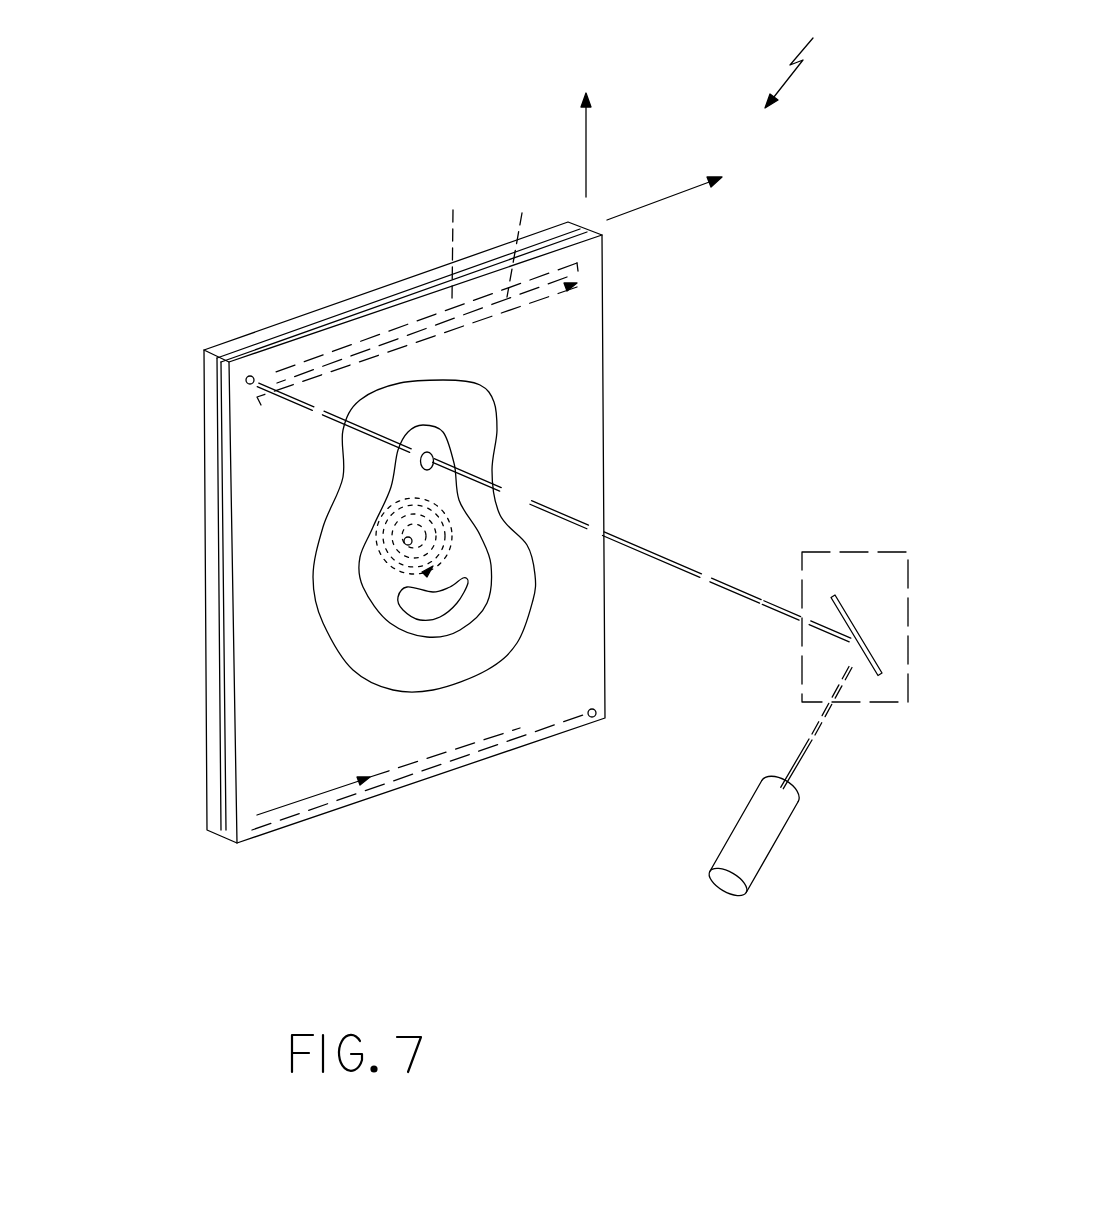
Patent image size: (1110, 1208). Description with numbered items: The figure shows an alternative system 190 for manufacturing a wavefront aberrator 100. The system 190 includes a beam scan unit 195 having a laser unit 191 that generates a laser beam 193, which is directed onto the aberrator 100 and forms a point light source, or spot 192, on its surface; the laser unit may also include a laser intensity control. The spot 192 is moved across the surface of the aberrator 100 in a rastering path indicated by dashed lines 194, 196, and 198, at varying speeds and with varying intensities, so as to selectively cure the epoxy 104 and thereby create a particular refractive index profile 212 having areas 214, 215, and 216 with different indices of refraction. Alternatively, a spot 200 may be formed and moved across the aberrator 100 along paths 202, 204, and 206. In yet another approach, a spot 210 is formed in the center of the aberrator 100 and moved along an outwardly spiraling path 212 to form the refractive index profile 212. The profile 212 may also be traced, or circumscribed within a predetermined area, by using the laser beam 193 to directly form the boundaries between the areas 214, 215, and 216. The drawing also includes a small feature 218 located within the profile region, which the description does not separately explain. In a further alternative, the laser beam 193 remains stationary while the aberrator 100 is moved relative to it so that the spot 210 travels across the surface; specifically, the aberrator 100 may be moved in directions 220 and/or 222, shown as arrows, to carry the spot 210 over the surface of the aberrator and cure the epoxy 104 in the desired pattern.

The wavefront aberrator 100 is at (216, 852).
The epoxy 104 is at (222, 405).
The system 190 is at (802, 57).
The laser unit 191 is at (772, 842).
The point light source (spot) 192 is at (248, 377).
The laser beam 193 is at (660, 568).
The dashed line (rastering path) 194 is at (455, 240).
The beam scan unit 195 is at (843, 550).
The dashed line (rastering path) 196 is at (608, 265).
The dashed line (rastering path) 198 is at (427, 283).
The spot 200 is at (598, 718).
The path 202 is at (560, 752).
The path 204 is at (447, 760).
The path 206 is at (413, 763).
The spot 210 is at (413, 540).
The refractive index profile 212 is at (300, 617).
The area 214 is at (350, 643).
The area 215 is at (372, 572).
The area 216 is at (422, 603).
The aperture 218 is at (420, 458).
The direction 220 is at (587, 143).
The direction 222 is at (638, 200).